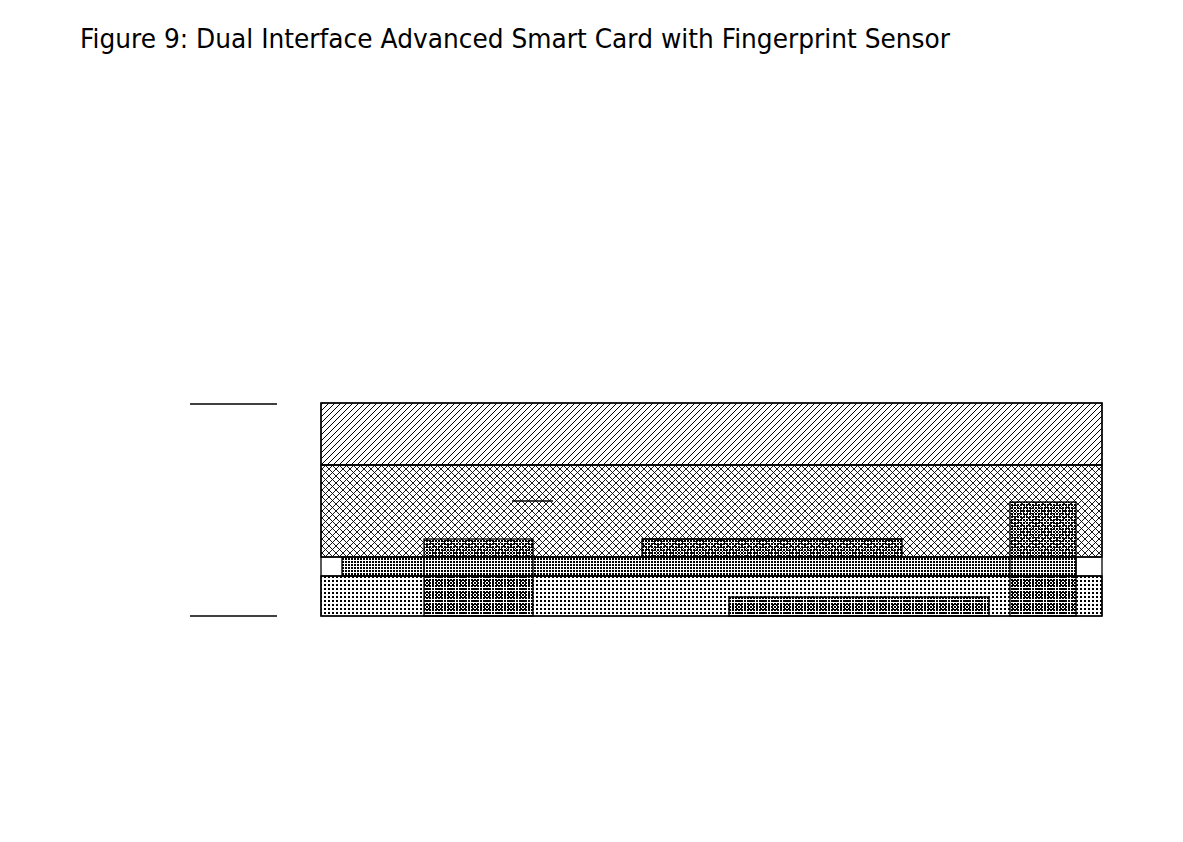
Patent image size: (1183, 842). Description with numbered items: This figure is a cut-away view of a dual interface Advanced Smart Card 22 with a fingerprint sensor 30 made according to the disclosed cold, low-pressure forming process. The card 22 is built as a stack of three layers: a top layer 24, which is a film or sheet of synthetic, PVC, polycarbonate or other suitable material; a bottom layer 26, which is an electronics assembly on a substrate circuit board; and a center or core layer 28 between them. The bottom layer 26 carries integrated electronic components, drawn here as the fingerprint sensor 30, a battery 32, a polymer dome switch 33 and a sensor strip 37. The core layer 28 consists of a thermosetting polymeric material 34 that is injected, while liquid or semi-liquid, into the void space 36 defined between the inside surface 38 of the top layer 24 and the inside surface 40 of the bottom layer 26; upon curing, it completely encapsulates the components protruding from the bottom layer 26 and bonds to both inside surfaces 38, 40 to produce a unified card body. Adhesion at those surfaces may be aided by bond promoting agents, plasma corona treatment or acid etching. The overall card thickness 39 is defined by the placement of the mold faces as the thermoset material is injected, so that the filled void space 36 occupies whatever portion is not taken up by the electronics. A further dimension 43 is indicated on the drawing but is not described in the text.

The Advanced Smart Card 22 is at (331, 163).
The top layer 24 is at (757, 436).
The bottom layer 26 is at (583, 609).
The core layer 28 is at (1064, 482).
The fingerprint sensor 30 is at (858, 628).
The battery 32 is at (834, 527).
The polymer dome switch 33 is at (1029, 628).
The thermosetting polymeric material 34 is at (784, 514).
The void space 36 is at (338, 453).
The sensor strip 37 is at (468, 628).
The inside surface of the top layer 38 is at (928, 477).
The thickness 39 is at (235, 416).
The inside surface of the bottom layer 40 is at (386, 547).
The sensor recess depth 43 is at (533, 557).